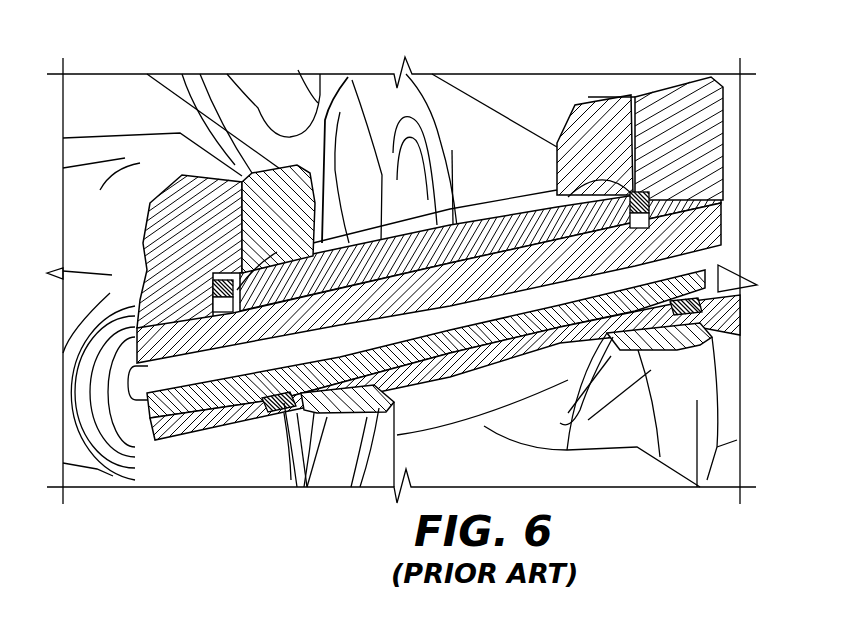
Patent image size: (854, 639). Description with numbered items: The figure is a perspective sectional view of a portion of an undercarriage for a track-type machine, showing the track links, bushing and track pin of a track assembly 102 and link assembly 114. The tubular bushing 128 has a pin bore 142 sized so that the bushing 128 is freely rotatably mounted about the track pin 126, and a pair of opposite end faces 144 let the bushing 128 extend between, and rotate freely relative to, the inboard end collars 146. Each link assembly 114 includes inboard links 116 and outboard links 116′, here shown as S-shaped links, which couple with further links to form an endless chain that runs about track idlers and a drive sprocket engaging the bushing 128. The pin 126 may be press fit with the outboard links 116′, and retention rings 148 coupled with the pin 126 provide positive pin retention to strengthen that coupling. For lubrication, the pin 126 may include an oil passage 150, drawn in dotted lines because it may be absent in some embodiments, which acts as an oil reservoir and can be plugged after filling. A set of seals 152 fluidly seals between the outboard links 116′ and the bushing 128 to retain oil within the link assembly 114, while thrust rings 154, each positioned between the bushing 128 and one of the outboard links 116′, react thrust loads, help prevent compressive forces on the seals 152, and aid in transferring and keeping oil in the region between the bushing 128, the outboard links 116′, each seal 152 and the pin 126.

The track assembly 102 is at (690, 50).
The link assembly 114 is at (611, 52).
The inboard links 116 is at (314, 200).
The outboard links 116′ is at (706, 143).
The track pin 126 is at (708, 233).
The tubular bushing 128 is at (441, 413).
The pin bore 142 is at (500, 252).
The end faces 144 is at (275, 272).
The inboard end collars 146 is at (270, 180).
The retention rings 148 is at (117, 291).
The oil passage 150 is at (428, 318).
The seals 152 is at (220, 282).
The thrust rings 154 is at (270, 400).